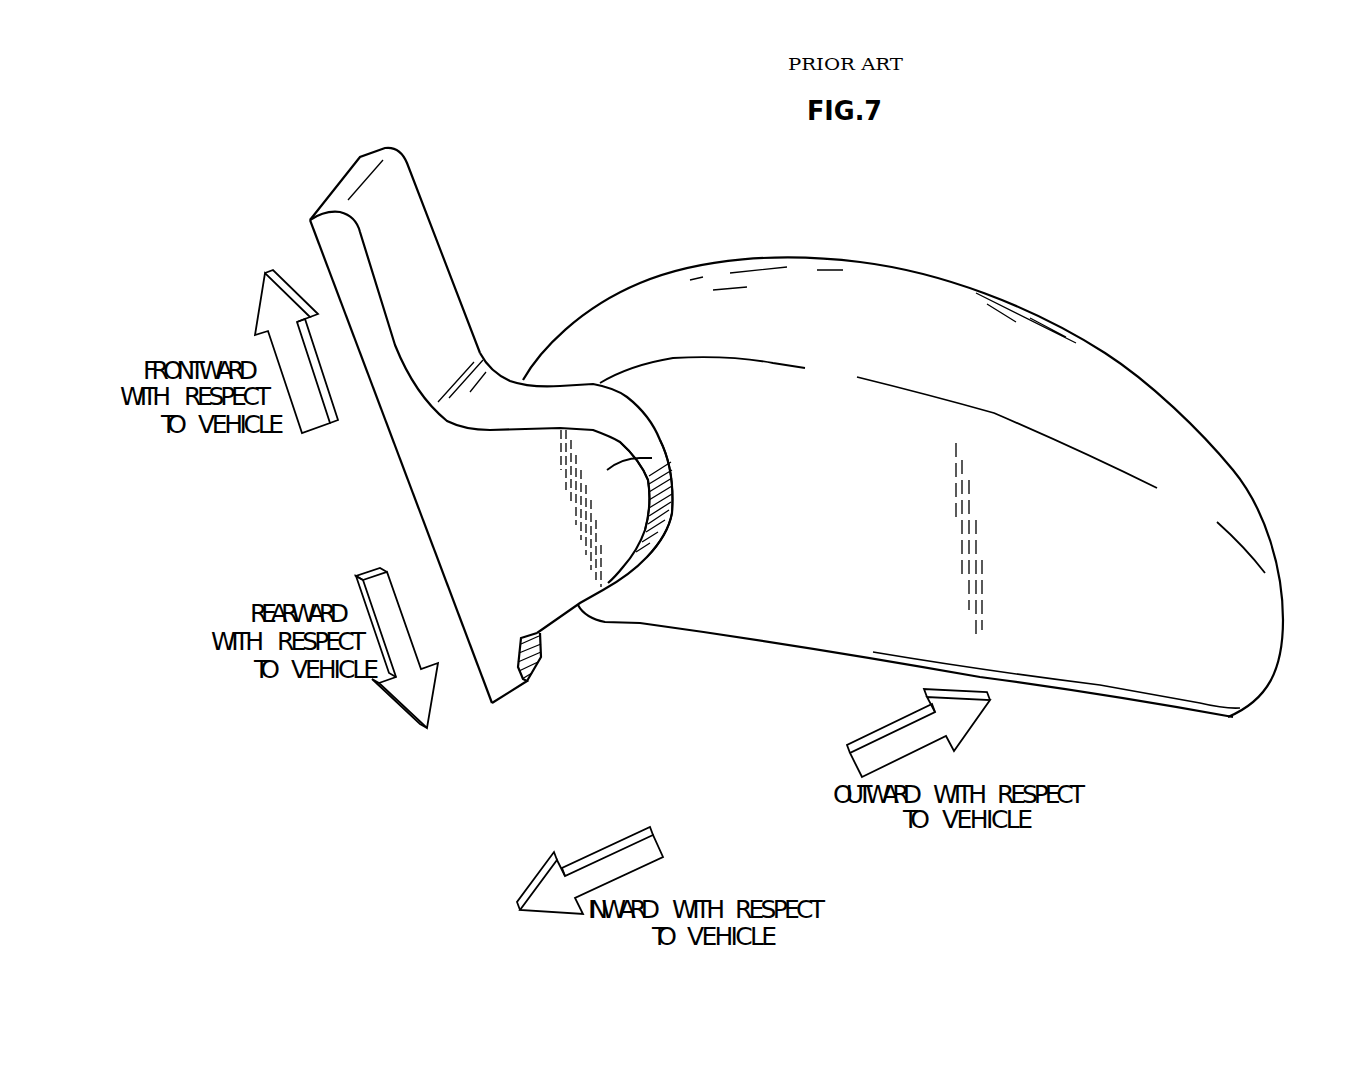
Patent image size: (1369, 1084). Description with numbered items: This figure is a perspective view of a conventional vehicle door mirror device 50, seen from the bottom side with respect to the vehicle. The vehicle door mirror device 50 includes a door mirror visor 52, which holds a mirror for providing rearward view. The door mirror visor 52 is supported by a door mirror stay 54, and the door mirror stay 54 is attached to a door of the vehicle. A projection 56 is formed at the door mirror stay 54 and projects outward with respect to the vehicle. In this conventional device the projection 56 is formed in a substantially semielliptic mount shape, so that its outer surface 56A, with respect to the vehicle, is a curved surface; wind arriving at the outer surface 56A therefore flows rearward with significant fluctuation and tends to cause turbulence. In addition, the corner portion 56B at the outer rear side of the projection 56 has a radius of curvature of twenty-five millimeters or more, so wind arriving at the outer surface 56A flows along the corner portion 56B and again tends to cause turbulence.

The vehicle door mirror device 50 is at (689, 165).
The door mirror visor 52 is at (1139, 369).
The door mirror stay 54 is at (417, 192).
The projection 56 is at (657, 458).
The outer surface 56A is at (672, 460).
The corner portion 56B is at (662, 539).